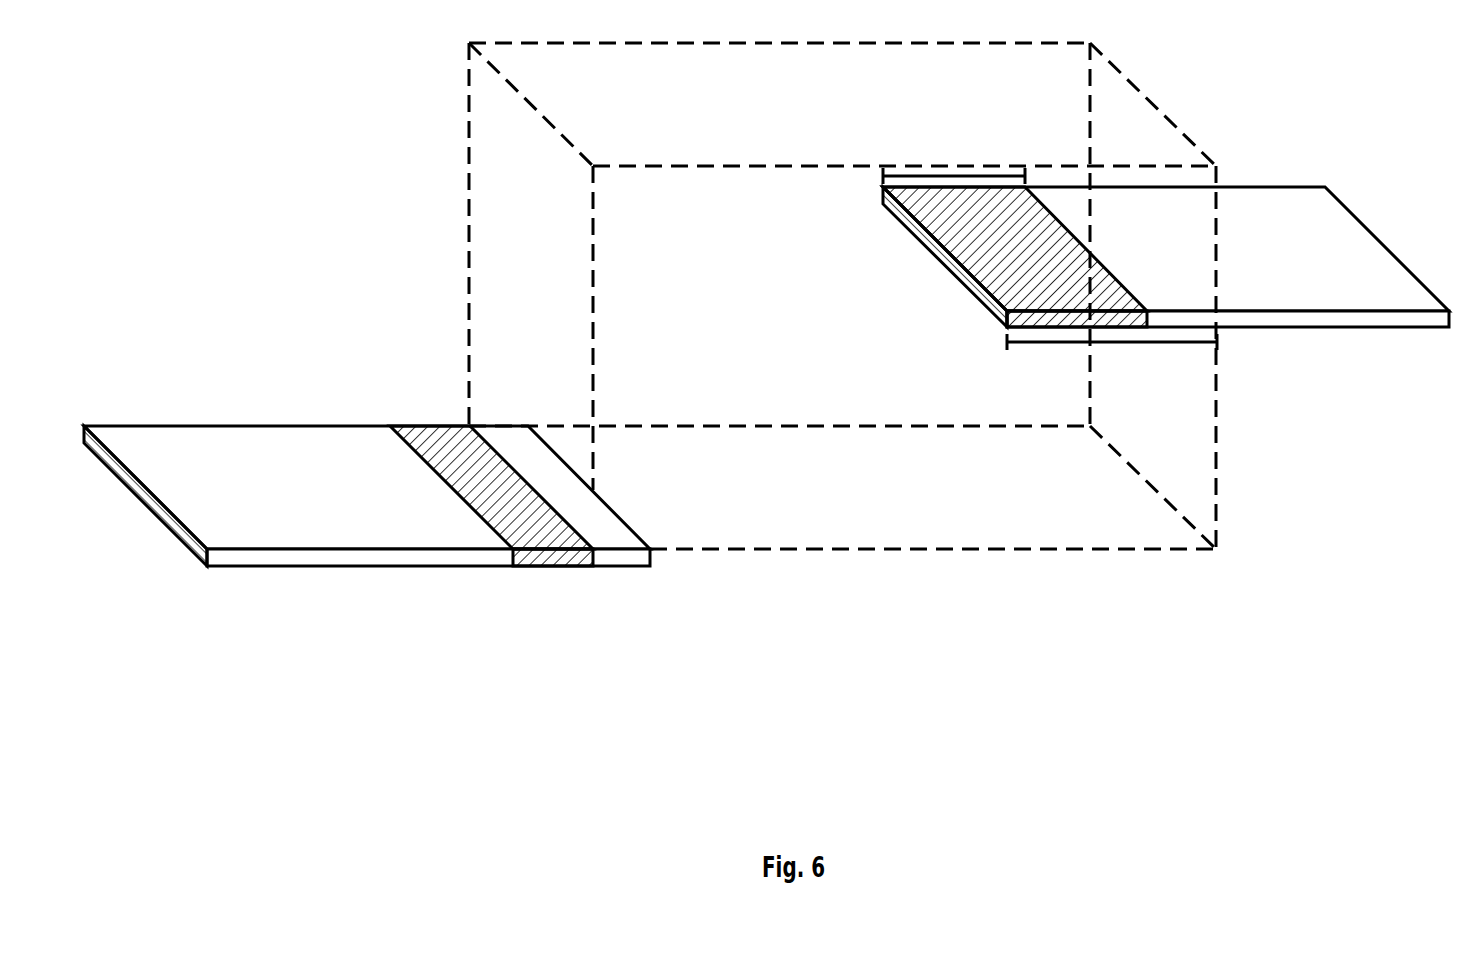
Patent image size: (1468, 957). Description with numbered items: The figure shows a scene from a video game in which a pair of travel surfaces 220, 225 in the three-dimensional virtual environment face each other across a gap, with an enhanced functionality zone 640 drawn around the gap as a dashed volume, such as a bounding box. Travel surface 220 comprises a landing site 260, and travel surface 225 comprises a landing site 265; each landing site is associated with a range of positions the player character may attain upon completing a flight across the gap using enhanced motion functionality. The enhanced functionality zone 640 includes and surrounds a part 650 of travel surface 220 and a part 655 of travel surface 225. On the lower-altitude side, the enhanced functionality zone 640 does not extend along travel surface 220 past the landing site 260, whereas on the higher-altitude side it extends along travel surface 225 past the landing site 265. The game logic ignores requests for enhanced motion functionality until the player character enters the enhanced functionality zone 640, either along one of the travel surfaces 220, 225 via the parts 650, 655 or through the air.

The travel surface 220 is at (345, 525).
The landing site 260 is at (538, 520).
The part of travel surface 650 is at (600, 520).
The travel surface 225 is at (1187, 208).
The landing site 265 is at (947, 176).
The part of travel surface 655 is at (1110, 342).
The enhanced functionality zone 640 is at (793, 523).